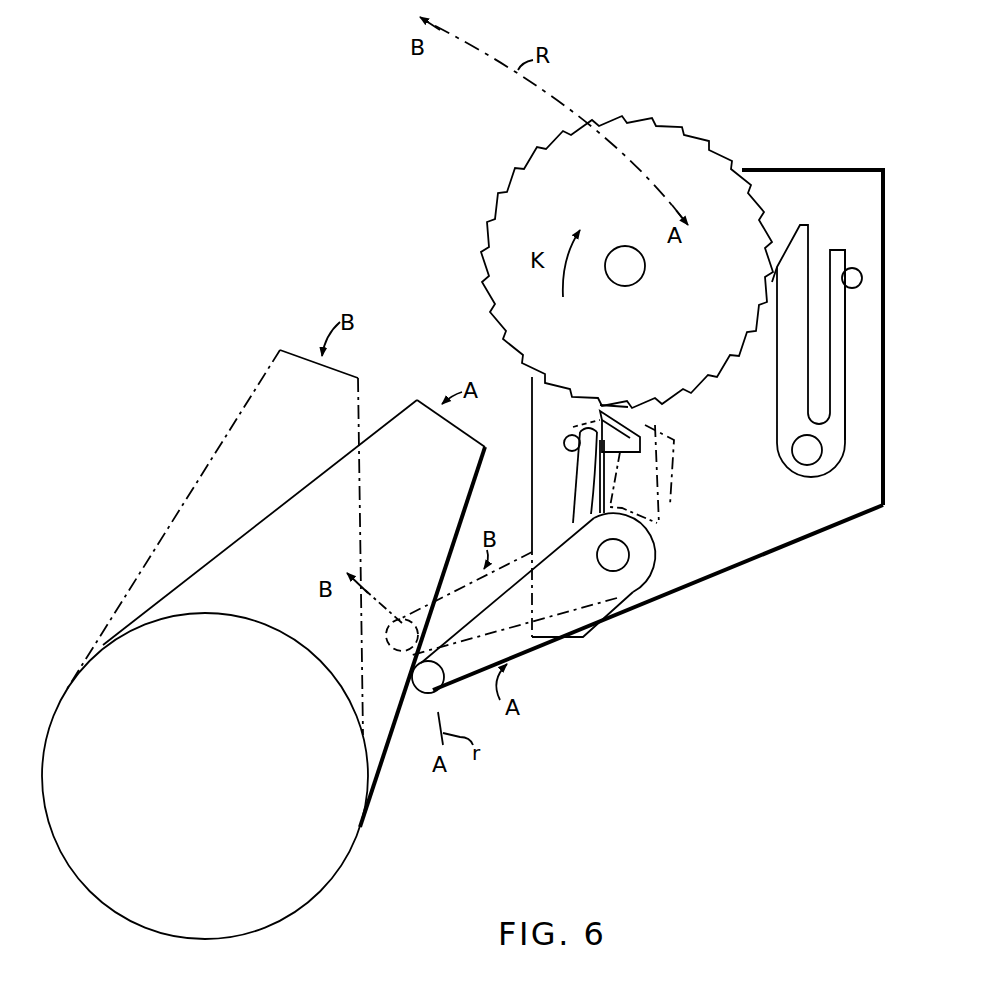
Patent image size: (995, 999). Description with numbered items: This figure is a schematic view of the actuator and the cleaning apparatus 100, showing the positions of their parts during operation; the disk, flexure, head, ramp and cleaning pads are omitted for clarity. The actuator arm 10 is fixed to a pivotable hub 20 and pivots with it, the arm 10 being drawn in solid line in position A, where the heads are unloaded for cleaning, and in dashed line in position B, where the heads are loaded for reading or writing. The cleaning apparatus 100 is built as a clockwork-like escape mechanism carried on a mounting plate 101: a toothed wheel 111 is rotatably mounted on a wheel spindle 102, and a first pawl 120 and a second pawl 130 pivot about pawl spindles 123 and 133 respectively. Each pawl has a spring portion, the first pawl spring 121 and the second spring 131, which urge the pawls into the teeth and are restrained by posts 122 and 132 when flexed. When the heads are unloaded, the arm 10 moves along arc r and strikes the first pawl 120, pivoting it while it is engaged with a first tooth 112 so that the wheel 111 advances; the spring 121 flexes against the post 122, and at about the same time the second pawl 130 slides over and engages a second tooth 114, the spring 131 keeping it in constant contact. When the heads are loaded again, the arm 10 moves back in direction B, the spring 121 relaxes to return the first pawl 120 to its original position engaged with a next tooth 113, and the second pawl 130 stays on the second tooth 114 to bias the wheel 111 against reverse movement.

The actuator arm 10 is at (254, 387).
The pivotable hub 20 is at (47, 803).
The cleaning apparatus 100 is at (707, 596).
The mounting plate 101 is at (795, 168).
The wheel spindle 102 is at (645, 263).
The toothed wheel 111 is at (667, 122).
The first tooth 112 is at (590, 404).
The next tooth 113 is at (620, 407).
The second tooth 114 is at (772, 282).
The first pawl 120 is at (550, 559).
The first pawl spring 121 is at (572, 498).
The post 122 is at (574, 429).
The pawl spindle 123 is at (616, 572).
The second pawl 130 is at (799, 474).
The second spring 131 is at (846, 368).
The post 132 is at (862, 279).
The pawl spindle 133 is at (822, 459).